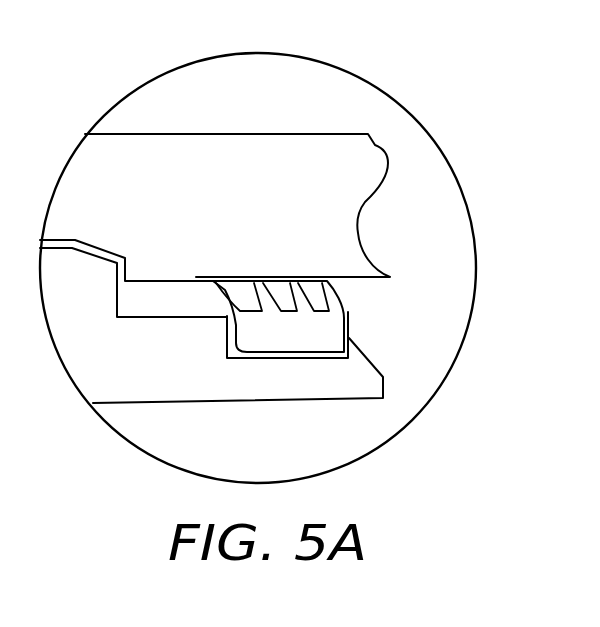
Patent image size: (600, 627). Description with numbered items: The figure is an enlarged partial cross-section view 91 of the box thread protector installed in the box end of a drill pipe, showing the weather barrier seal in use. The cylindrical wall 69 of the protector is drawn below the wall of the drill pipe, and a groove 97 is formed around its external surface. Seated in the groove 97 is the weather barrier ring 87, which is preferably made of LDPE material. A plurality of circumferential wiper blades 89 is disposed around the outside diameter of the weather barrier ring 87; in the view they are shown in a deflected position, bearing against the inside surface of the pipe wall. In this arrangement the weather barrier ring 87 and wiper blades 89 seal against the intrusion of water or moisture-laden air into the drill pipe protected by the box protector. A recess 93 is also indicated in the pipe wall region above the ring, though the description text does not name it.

The partial cross-section view 91 is at (345, 70).
The recess in housing wall 93 is at (368, 279).
The wiper blades 89 is at (332, 292).
The weather barrier ring 87 is at (323, 333).
The groove 97 is at (227, 349).
The cylindrical wall 69 is at (205, 401).